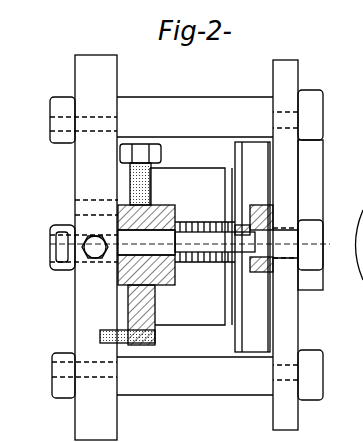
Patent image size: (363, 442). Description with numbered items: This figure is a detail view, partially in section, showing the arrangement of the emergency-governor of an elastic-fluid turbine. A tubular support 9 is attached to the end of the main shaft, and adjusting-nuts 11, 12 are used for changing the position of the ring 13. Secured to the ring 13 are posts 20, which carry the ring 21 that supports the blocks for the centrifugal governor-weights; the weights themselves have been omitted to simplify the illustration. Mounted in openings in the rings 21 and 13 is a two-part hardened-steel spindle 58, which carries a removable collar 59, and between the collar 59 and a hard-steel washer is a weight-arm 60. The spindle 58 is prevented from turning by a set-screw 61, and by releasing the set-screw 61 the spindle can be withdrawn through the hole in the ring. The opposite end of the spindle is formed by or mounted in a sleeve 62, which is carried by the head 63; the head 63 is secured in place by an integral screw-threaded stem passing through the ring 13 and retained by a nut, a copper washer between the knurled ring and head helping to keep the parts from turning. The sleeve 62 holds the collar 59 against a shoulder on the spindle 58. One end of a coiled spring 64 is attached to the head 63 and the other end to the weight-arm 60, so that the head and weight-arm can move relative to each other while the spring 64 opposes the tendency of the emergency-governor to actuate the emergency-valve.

The tubular support 9 is at (205, 178).
The adjusting-nut 11 is at (252, 348).
The adjusting-nut 12 is at (318, 152).
The ring 13 is at (298, 72).
The posts 20 is at (197, 108).
The ring 21 is at (78, 80).
The spindle 58 is at (115, 265).
The removable collar 59 is at (165, 228).
The weight-arm 60 is at (132, 310).
The set-screw 61 is at (93, 236).
The sleeve 62 is at (248, 222).
The head 63 is at (273, 273).
The coiled spring 64 is at (212, 222).